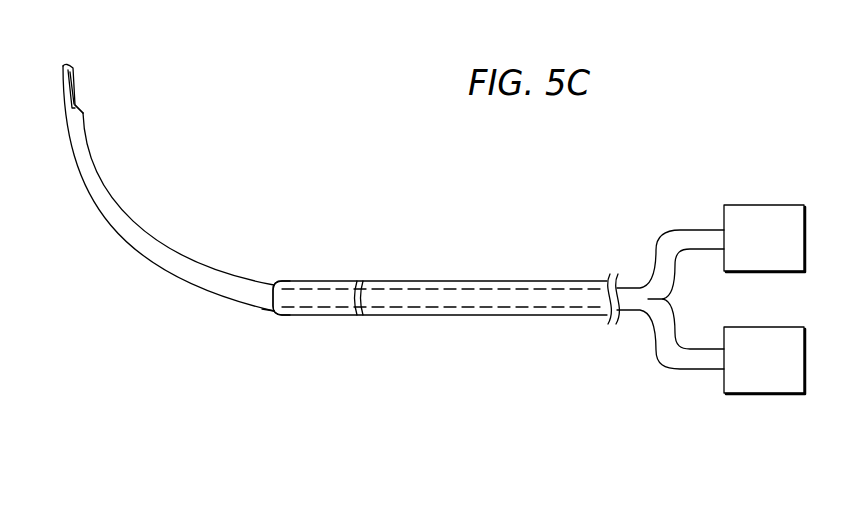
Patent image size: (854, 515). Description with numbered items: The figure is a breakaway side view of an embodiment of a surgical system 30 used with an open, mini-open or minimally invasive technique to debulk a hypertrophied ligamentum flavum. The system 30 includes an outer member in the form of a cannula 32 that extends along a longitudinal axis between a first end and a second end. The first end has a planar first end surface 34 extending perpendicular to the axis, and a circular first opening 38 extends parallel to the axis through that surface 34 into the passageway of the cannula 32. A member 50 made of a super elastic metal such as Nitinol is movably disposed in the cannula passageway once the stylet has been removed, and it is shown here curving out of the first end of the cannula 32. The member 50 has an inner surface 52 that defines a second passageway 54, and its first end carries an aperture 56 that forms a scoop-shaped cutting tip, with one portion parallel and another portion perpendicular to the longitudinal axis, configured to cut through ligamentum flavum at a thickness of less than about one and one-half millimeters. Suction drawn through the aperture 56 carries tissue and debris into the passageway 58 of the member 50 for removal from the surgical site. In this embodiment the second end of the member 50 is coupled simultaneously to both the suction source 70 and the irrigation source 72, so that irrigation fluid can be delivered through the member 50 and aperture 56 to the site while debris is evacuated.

The system 30 is at (462, 298).
The cannula 32 is at (484, 275).
The first end surface 34 is at (272, 281).
The first opening 38 is at (263, 316).
The member 50 is at (133, 265).
The inner surface 52 is at (75, 70).
The second passageway 54 is at (79, 97).
The aperture 56 is at (94, 101).
The passageway 58 is at (63, 64).
The suction source 70 is at (775, 250).
The irrigation source 72 is at (775, 374).